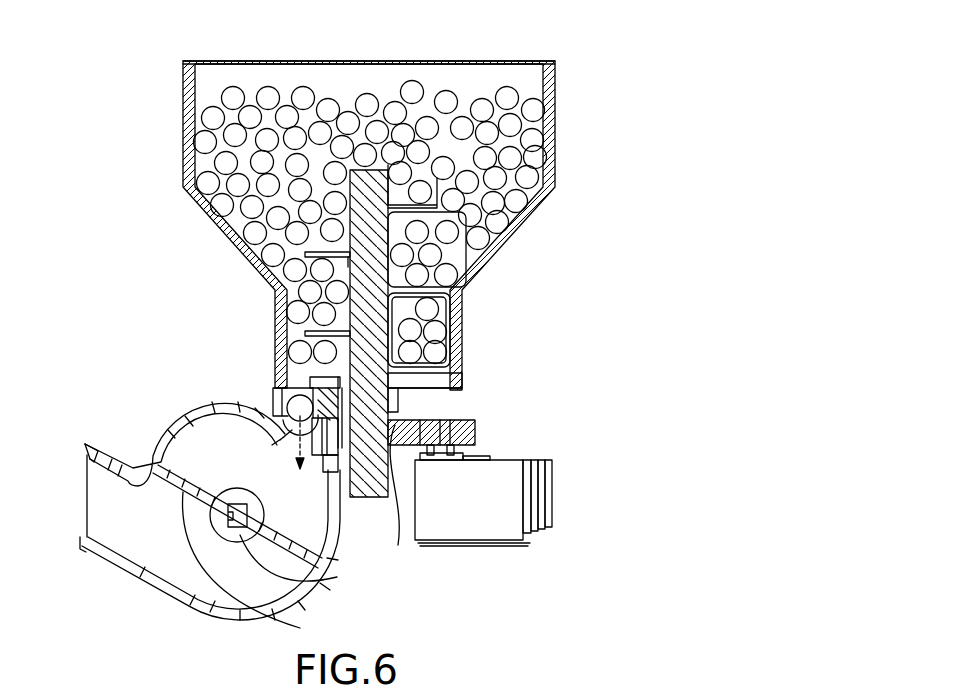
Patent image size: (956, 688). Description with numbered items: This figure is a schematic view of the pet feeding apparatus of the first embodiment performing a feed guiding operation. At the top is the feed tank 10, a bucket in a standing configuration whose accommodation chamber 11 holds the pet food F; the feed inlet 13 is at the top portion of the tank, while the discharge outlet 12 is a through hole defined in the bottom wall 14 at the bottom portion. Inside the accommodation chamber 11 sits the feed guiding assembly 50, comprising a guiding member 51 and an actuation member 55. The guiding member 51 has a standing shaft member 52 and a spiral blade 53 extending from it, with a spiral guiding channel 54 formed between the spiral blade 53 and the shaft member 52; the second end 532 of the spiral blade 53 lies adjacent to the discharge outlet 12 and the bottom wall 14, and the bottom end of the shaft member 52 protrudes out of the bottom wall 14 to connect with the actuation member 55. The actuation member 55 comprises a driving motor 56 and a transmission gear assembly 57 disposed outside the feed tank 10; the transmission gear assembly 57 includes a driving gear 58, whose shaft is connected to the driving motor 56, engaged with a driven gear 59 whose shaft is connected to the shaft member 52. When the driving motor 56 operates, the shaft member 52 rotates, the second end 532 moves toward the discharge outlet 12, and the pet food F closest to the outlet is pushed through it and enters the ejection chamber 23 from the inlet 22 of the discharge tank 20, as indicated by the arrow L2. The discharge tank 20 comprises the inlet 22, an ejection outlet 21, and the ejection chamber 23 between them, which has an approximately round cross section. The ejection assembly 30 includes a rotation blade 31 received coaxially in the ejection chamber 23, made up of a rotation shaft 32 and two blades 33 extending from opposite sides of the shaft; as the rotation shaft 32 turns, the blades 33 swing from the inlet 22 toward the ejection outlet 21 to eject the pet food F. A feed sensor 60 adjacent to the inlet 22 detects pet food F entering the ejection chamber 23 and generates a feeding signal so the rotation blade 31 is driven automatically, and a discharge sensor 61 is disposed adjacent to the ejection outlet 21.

The feed tank 10 is at (549, 152).
The accommodation chamber 11 is at (245, 80).
The discharge outlet 12 is at (277, 369).
The feed inlet 13 is at (497, 61).
The bottom wall 14 is at (443, 392).
The discharge tank 20 is at (123, 573).
The ejection outlet 21 is at (87, 457).
The inlet 22 is at (278, 390).
The ejection chamber 23 is at (177, 430).
The ejection assembly 30 is at (313, 553).
The rotation blade 31 is at (289, 553).
The rotation shaft 32 is at (313, 580).
The blade 33 is at (325, 563).
The feed guiding assembly 50 is at (516, 365).
The guiding member 51 is at (452, 331).
The shaft member 52 is at (420, 247).
The spiral blade 53 is at (445, 285).
The spiral guiding channel 54 is at (405, 312).
The second end 532 is at (427, 383).
The actuation member 55 is at (531, 470).
The driving motor 56 is at (519, 503).
The transmission gear assembly 57 is at (480, 430).
The driving gear 58 is at (460, 420).
The driven gear 59 is at (402, 495).
The feed sensor 60 is at (327, 392).
The discharge sensor 61 is at (97, 442).
The pet food F is at (412, 92).
The arrow L2 is at (197, 450).